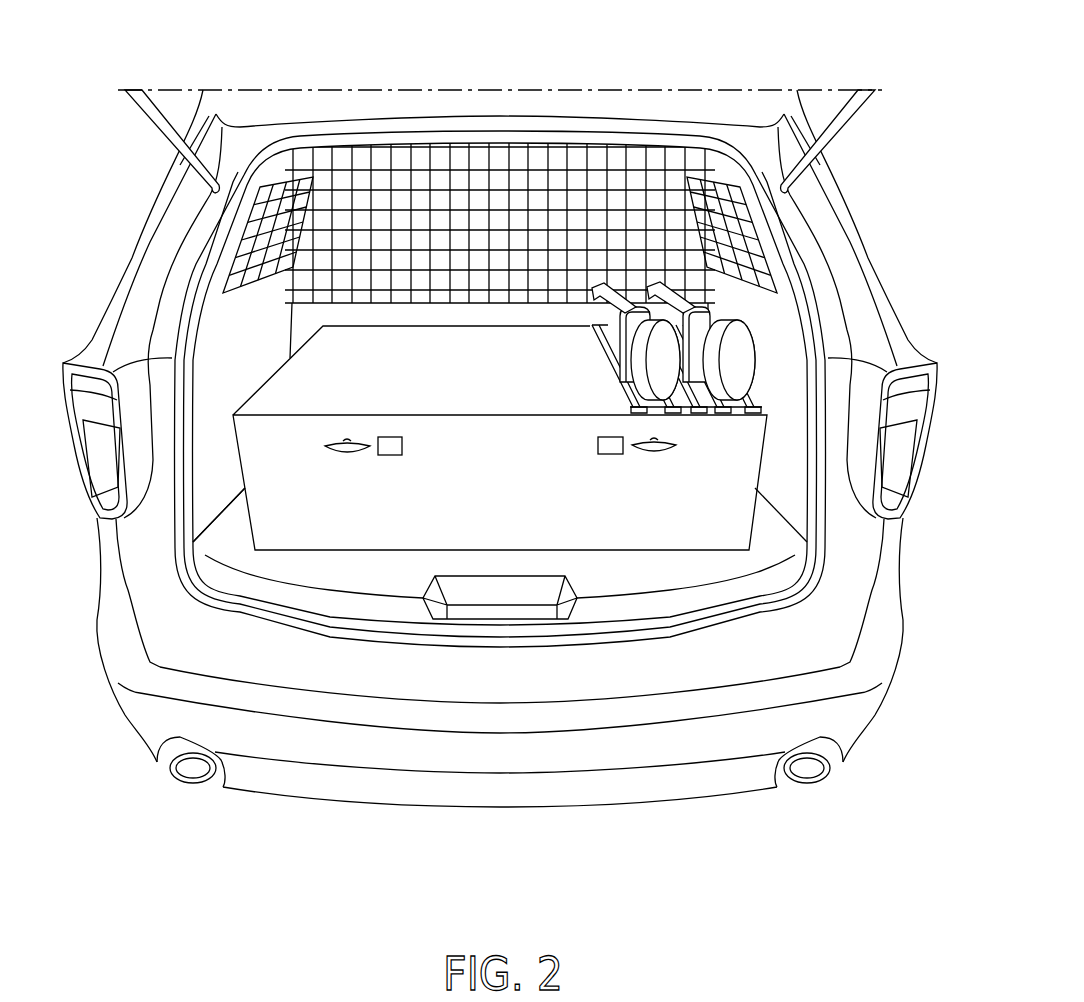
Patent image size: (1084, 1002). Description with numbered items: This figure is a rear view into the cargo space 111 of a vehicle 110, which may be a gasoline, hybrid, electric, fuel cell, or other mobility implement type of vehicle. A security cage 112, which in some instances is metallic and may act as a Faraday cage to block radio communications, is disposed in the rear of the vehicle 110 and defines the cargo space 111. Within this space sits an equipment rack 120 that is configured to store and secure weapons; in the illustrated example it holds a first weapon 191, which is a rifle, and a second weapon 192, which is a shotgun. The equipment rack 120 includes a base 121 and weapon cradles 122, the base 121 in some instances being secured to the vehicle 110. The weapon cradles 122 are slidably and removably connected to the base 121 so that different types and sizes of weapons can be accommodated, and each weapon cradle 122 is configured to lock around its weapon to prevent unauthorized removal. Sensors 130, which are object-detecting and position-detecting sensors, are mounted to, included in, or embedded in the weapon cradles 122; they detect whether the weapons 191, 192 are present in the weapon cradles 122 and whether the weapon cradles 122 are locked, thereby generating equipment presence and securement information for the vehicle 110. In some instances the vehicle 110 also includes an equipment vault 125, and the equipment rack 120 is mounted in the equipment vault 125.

The vehicle 110 is at (175, 60).
The cargo space 111 is at (480, 203).
The security cage 112 is at (290, 185).
The equipment rack 120 is at (600, 338).
The base 121 is at (718, 412).
The weapon cradles 122 is at (665, 360).
The equipment vault 125 is at (313, 498).
The sensors 130 is at (390, 455).
The first weapon 191 is at (622, 362).
The second weapon 192 is at (752, 358).